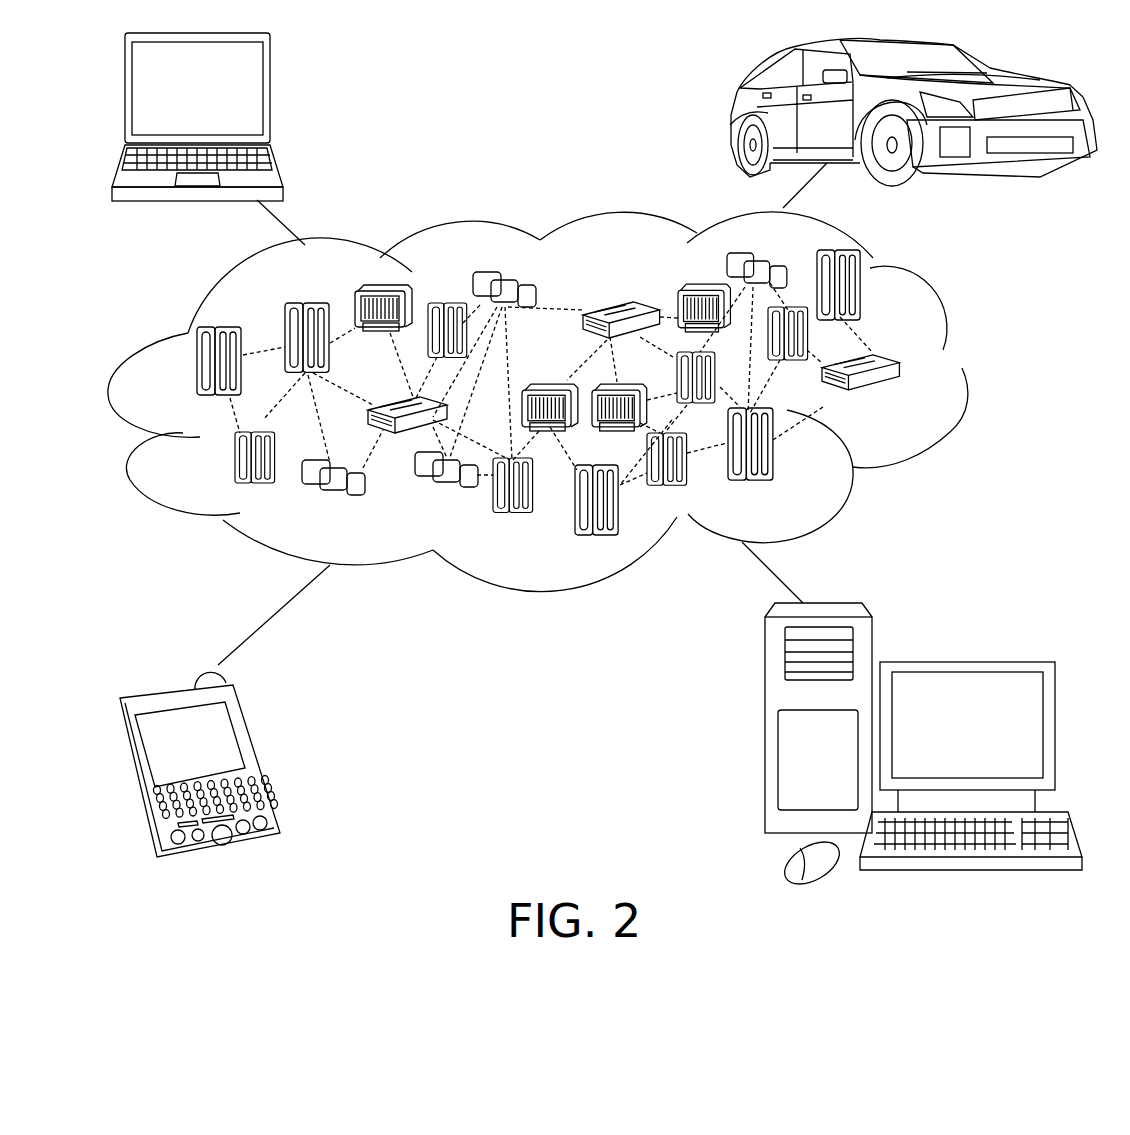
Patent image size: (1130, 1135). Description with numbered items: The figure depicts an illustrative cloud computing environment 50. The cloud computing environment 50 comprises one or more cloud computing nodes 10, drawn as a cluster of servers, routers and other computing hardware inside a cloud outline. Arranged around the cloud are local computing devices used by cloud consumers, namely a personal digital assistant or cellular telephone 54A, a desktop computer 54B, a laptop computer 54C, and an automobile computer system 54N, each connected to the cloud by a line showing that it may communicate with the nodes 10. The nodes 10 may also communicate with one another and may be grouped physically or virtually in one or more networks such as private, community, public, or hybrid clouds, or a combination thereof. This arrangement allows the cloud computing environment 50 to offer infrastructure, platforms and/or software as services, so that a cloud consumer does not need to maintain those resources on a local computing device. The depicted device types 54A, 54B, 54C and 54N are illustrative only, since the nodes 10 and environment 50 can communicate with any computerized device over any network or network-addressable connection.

The cloud computing nodes 10 is at (903, 400).
The cloud computing environment 50 is at (962, 368).
The personal digital assistant or cellular telephone 54A is at (257, 757).
The desktop computer 54B is at (963, 660).
The laptop computer 54C is at (273, 95).
The automobile computer system 54N is at (733, 112).